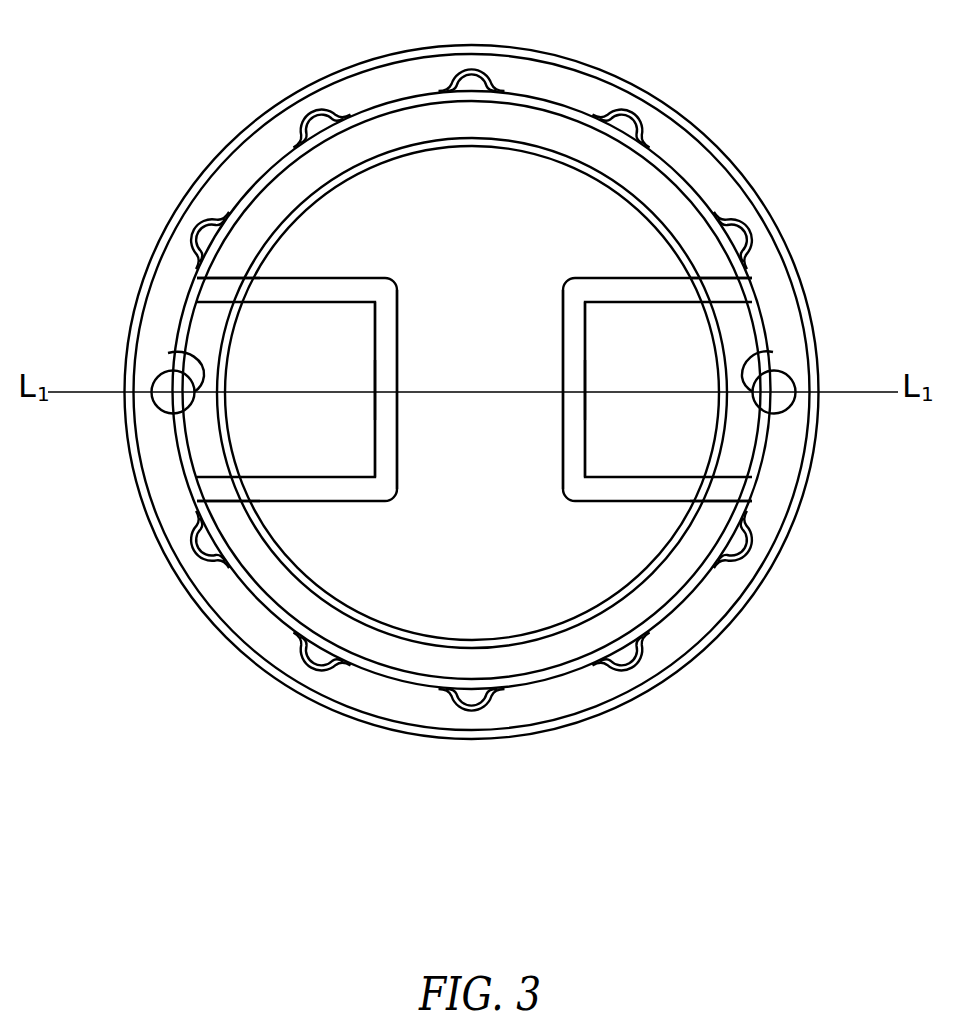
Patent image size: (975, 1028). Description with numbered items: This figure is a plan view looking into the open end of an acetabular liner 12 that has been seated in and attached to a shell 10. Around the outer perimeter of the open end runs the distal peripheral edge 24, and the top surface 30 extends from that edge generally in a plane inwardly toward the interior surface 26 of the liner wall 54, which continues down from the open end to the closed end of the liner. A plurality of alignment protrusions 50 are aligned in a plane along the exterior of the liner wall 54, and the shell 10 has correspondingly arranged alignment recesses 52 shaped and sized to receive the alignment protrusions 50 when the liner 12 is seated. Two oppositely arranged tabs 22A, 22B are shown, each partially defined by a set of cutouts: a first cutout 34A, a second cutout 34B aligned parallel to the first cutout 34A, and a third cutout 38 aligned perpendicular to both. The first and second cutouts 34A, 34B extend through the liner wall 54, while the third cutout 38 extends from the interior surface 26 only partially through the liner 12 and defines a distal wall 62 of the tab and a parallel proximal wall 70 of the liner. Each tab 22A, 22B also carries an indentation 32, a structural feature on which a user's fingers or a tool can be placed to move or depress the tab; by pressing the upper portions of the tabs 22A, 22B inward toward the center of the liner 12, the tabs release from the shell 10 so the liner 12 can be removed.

The shell 10 is at (623, 708).
The liner 12 is at (518, 678).
The tab 22A is at (756, 443).
The tab 22B is at (190, 443).
The distal peripheral edge 24 is at (405, 102).
The interior surface 26 is at (383, 572).
The top surface 30 is at (668, 197).
The indentation 32 is at (168, 353).
The first cutout 34A is at (240, 500).
The second cutout 34B is at (238, 284).
The third cutout 38 is at (385, 383).
The alignment protrusions 50 is at (627, 128).
The alignment recesses 52 is at (493, 74).
The liner wall 54 is at (688, 597).
The distal wall 62 is at (384, 436).
The proximal wall 70 is at (390, 339).